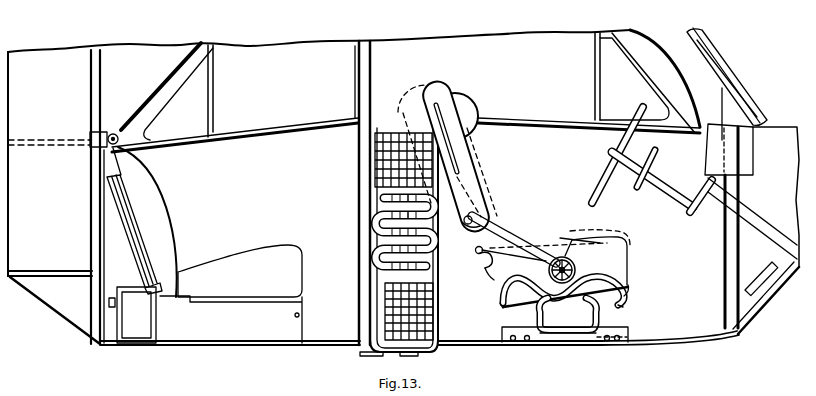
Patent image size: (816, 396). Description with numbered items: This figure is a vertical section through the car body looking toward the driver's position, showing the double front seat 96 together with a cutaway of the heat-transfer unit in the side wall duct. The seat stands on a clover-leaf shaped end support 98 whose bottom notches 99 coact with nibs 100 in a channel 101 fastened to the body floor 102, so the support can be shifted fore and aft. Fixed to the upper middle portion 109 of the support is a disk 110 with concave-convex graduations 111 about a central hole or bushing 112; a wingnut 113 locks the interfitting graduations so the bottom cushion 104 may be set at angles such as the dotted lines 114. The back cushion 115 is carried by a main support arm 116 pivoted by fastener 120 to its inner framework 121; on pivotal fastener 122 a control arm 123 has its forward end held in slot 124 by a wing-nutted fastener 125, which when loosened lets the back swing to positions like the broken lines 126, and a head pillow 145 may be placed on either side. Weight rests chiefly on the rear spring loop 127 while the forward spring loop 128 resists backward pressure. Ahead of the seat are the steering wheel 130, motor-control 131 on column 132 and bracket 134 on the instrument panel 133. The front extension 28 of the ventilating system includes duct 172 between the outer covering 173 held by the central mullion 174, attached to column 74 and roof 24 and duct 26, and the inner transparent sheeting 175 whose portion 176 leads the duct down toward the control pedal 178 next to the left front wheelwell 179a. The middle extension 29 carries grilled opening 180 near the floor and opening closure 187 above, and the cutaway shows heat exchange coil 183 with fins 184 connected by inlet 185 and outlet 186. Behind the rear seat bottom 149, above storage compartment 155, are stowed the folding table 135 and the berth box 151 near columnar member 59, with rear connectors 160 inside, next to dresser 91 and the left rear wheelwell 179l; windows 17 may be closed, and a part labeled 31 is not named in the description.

The windows 17 is at (288, 84).
The roof 24 is at (700, 32).
The ventilating duct 26 is at (655, 30).
The front extension of the ventilating system 28 is at (748, 196).
The middle extension of the ventilating system 29 is at (366, 50).
The floor 31 is at (698, 339).
The columnar member 59 is at (97, 251).
The column 74 is at (733, 103).
The dresser 91 is at (57, 138).
The double front seat 96 is at (500, 297).
The clover-leaf shaped end support 98 is at (630, 289).
The bottom notches 99 is at (518, 344).
The nibs 100 is at (602, 349).
The channel 101 is at (612, 344).
The body floor 102 is at (490, 344).
The bottom cushion 104 is at (630, 248).
The upper middle portion 109 is at (557, 236).
The disk 110 is at (612, 243).
The concave-convex graduations 111 is at (540, 279).
The central hole or bushing 112 is at (576, 268).
The wingnut 113 is at (565, 303).
The dotted lines 114 is at (629, 233).
The back cushion 115 is at (481, 161).
The main support arm 116 is at (473, 220).
The fastener 120 is at (483, 204).
The inner framework 121 is at (489, 179).
The pivotal fastener 122 is at (478, 265).
The control arm 123 is at (487, 276).
The slot 124 is at (514, 239).
The wing-nutted fastener 125 is at (529, 238).
The broken lines 126 is at (410, 96).
The rear spring loop 127 is at (503, 312).
The forward spring loop 128 is at (622, 311).
The steering wheel 130 is at (614, 140).
The motor-control 131 is at (652, 153).
The column 132 is at (680, 205).
The instrument panel 133 is at (710, 160).
The bracket 134 is at (685, 204).
The demountable folding table 135 is at (125, 232).
The head pillow 145 is at (468, 115).
The bottom of rear seat 149 is at (235, 284).
The box 151 is at (126, 323).
The storage compartment 155 is at (236, 329).
The rear connectors 160 is at (89, 147).
The duct 172 is at (681, 38).
The glazed or plastics covering 173 is at (718, 47).
The rigid central mullion 174 is at (721, 70).
The transparent plastics sheeting 175 is at (660, 80).
The portion 176 is at (743, 169).
The control pedal 178 is at (748, 288).
The left front wheelwell 179a is at (757, 305).
The left rear wheelwell 179l is at (62, 316).
The grilled opening 180 is at (372, 313).
The heat exchange coil 183 is at (380, 218).
The fins 184 is at (394, 233).
The inlet 185 is at (360, 355).
The outlet 186 is at (420, 356).
The opening closure 187 is at (373, 162).